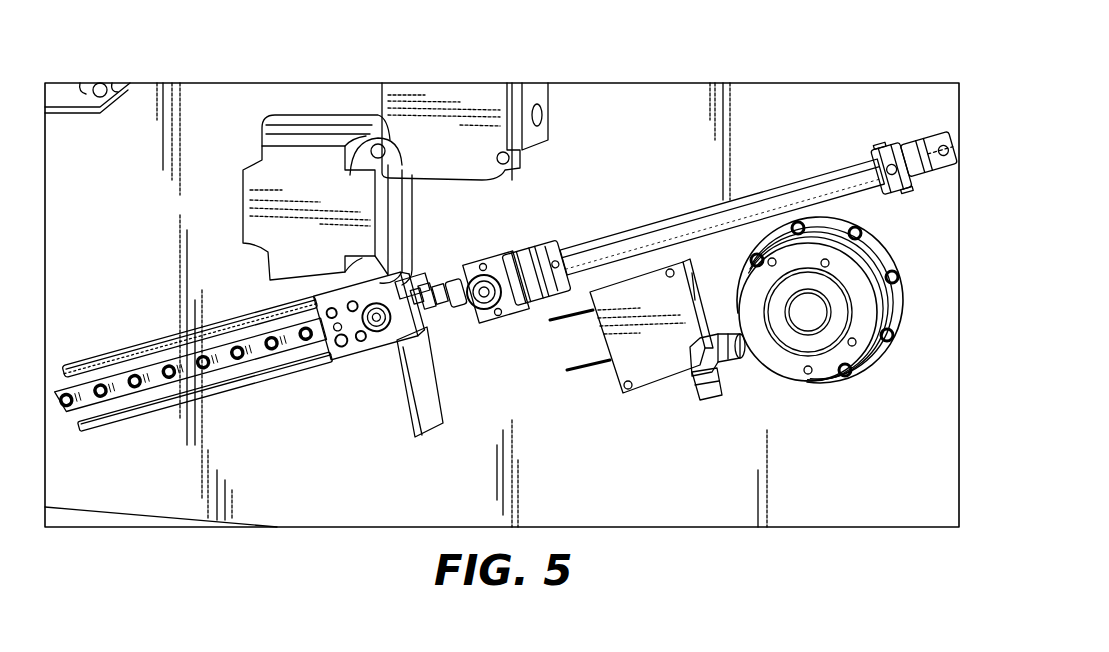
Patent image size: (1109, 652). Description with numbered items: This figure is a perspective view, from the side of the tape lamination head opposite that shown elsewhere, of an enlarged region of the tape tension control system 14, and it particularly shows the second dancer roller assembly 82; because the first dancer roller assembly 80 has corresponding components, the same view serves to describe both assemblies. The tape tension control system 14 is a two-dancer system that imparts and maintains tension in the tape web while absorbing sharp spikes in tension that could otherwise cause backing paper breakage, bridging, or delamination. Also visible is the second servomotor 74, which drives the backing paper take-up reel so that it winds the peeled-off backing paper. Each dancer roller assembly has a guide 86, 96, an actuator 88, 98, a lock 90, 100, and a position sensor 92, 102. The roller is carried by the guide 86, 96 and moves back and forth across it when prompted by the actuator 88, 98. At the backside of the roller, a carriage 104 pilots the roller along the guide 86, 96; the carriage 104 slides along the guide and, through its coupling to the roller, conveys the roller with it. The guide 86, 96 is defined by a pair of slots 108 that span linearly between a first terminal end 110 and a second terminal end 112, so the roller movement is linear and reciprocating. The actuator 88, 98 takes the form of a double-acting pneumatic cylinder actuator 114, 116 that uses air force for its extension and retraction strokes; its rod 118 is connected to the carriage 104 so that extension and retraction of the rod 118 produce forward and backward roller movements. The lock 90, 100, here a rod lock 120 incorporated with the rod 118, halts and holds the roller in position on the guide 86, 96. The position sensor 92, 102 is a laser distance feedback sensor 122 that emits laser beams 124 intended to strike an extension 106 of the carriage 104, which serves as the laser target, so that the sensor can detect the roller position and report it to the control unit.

The tape tension control system 14 is at (883, 103).
The second servomotor 74 is at (840, 353).
The first dancer roller assembly 80 is at (502, 275).
The second dancer roller assembly 82 is at (782, 96).
The first guide 86 is at (190, 318).
The first actuator 88 is at (722, 201).
The first lock 90 is at (558, 242).
The first position sensor 92 is at (648, 360).
The second guide 96 is at (252, 300).
The second actuator 98 is at (781, 185).
The second lock 100 is at (540, 240).
The second position sensor 102 is at (628, 373).
The carriage 104 is at (372, 353).
The extension 106 is at (417, 407).
The slots 108 is at (138, 355).
The first terminal end 110 is at (60, 370).
The second terminal end 112 is at (426, 272).
The pneumatic cylinder actuator 114 is at (722, 211).
The pneumatic cylinder actuator 116 is at (645, 232).
The rod 118 is at (440, 282).
The rod lock 120 is at (497, 305).
The laser distance feedback sensor 122 is at (668, 360).
The laser beams 124 is at (593, 360).